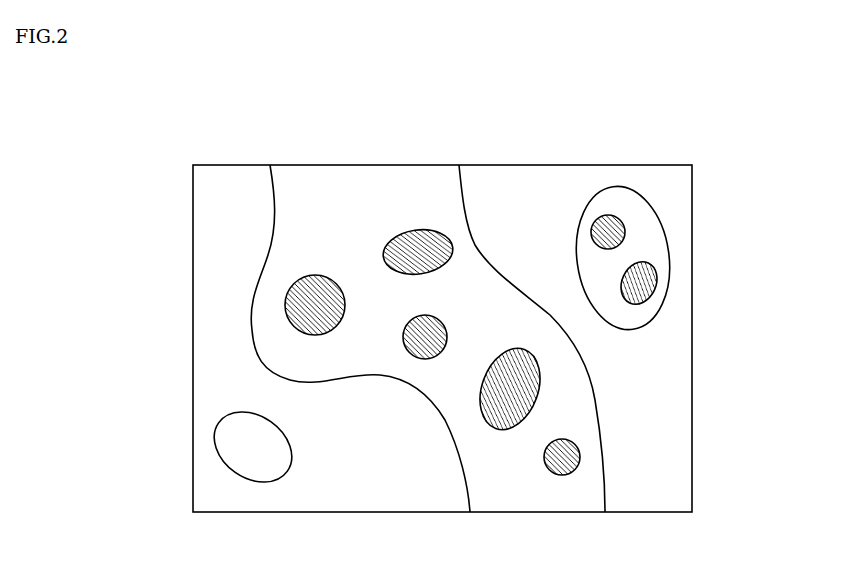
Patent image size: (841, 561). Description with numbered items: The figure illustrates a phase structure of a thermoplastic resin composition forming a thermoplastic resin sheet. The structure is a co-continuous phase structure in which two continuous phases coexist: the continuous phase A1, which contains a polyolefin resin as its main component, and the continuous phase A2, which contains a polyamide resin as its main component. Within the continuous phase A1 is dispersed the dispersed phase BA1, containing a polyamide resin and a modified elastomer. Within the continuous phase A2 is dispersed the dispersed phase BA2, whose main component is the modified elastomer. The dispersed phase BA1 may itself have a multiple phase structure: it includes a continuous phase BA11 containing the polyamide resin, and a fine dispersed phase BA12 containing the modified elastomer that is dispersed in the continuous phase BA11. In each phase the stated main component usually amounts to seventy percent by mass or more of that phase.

The continuous phase A1 is at (233, 170).
The continuous phase A2 is at (320, 172).
The dispersed phase BA1 is at (722, 131).
The dispersed phase BA2 is at (573, 521).
The continuous phase BA11 is at (617, 200).
The fine dispersed phase BA12 is at (644, 263).